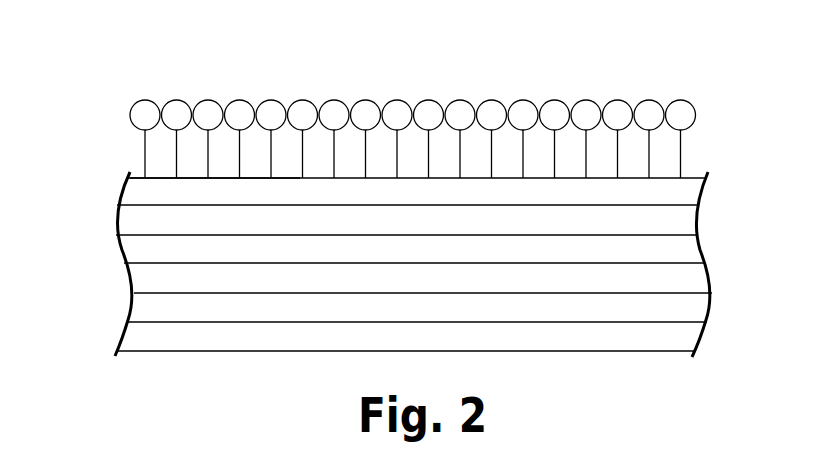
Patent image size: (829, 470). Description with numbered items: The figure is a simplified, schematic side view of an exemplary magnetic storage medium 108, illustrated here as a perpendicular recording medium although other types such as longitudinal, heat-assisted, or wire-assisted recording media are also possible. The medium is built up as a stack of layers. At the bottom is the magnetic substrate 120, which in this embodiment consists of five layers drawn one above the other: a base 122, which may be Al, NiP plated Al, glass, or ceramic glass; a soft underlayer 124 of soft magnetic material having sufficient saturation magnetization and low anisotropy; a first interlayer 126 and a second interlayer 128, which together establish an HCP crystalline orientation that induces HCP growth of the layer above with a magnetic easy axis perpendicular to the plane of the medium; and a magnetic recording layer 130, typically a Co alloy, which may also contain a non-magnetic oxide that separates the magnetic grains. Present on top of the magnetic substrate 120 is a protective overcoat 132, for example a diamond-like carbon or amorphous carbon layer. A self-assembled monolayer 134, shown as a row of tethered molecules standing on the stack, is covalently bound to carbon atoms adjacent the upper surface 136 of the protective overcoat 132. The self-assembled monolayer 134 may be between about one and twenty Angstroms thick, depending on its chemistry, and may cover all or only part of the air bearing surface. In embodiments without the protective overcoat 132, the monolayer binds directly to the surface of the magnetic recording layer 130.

The magnetic storage medium 108 is at (155, 72).
The magnetic substrate 120 is at (106, 203).
The base 122 is at (690, 332).
The soft underlayer 124 is at (690, 302).
The first interlayer 126 is at (690, 274).
The second interlayer 128 is at (690, 245).
The magnetic recording layer 130 is at (690, 217).
The protective overcoat 132 is at (690, 189).
The self-assembled monolayer 134 is at (717, 97).
The upper surface 136 is at (130, 170).